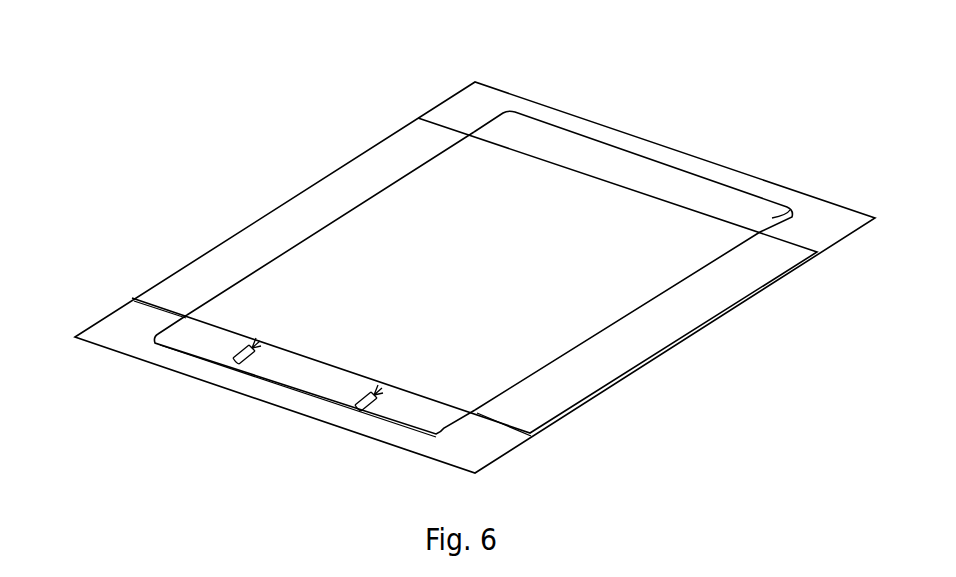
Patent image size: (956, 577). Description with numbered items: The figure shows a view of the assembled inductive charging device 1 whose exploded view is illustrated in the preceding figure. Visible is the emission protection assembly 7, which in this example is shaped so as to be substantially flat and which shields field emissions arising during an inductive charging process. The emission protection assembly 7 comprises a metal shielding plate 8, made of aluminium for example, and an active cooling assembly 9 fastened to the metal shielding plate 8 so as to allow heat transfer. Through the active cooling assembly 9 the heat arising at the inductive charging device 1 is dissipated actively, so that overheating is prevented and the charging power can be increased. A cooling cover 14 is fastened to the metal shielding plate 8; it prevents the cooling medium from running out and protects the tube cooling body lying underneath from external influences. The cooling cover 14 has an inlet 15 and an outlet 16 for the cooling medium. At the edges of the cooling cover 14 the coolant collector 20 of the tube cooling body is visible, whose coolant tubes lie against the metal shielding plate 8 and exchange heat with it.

The inductive charging device 1 is at (259, 122).
The emission protection assembly 7 is at (162, 226).
The metal shielding plate 8 is at (673, 332).
The active cooling assembly 9 is at (611, 204).
The cooling cover 14 is at (298, 270).
The inlet 15 is at (243, 359).
The outlet 16 is at (370, 407).
The coolant collector 20 is at (731, 204).